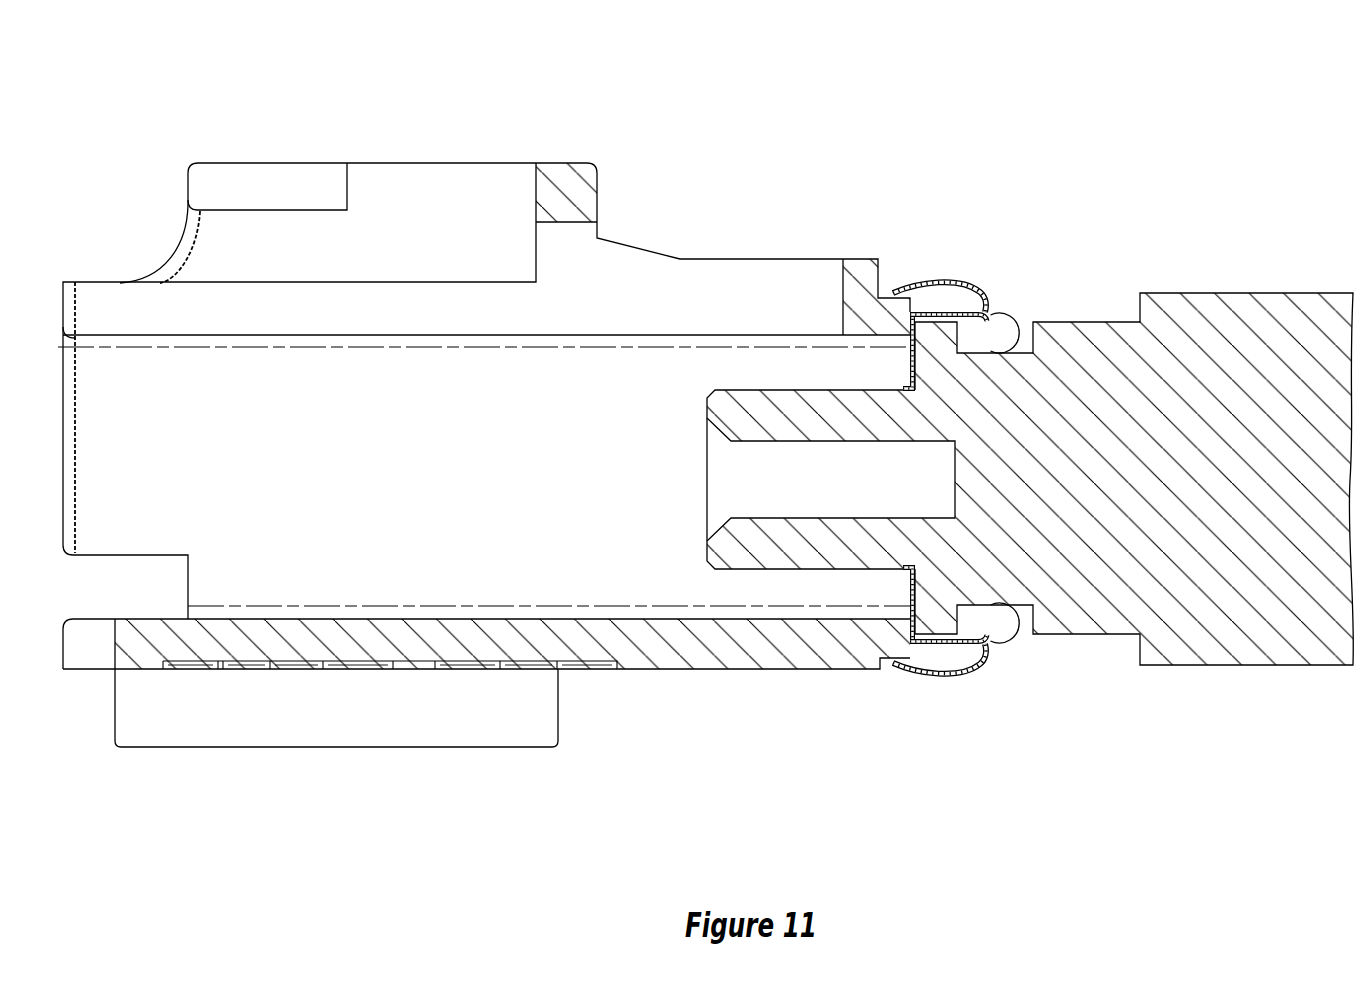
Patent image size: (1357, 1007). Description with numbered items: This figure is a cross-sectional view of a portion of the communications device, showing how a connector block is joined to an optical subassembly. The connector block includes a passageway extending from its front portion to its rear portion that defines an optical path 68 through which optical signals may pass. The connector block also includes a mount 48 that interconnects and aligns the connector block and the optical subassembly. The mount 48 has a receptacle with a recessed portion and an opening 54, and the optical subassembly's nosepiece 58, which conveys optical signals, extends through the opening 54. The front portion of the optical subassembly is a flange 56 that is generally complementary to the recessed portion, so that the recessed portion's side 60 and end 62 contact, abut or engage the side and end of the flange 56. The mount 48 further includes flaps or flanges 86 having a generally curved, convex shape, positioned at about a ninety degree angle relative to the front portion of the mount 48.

The optical path 68 is at (138, 460).
The nosepiece 58 is at (724, 392).
The flange 56 is at (955, 338).
The opening 54 is at (868, 479).
The end 62 is at (911, 375).
The side 60 is at (942, 312).
The mount 48 is at (975, 479).
The flaps or flanges 86 is at (950, 284).